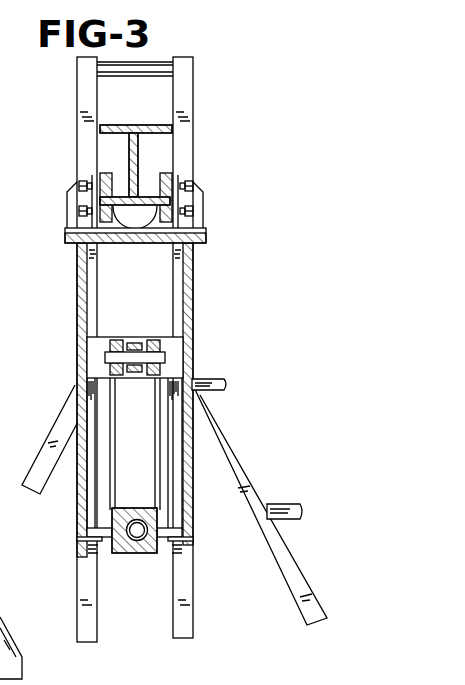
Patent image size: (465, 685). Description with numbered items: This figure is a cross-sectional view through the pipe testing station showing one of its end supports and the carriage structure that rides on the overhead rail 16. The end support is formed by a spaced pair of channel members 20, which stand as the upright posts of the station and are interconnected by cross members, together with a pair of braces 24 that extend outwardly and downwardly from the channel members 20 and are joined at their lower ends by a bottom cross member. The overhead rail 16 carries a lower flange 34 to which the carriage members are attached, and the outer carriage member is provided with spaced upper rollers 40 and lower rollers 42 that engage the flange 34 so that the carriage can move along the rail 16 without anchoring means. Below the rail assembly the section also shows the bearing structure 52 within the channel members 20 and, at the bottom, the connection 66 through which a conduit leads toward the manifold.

The overhead rail 16 is at (145, 125).
The channel members 20 is at (173, 625).
The braces 24 is at (298, 598).
The lower flange 34 is at (100, 211).
The upper rollers 40 is at (107, 183).
The lower rollers 42 is at (134, 234).
The bearing assembly 52 is at (137, 353).
The connection 66 is at (138, 543).